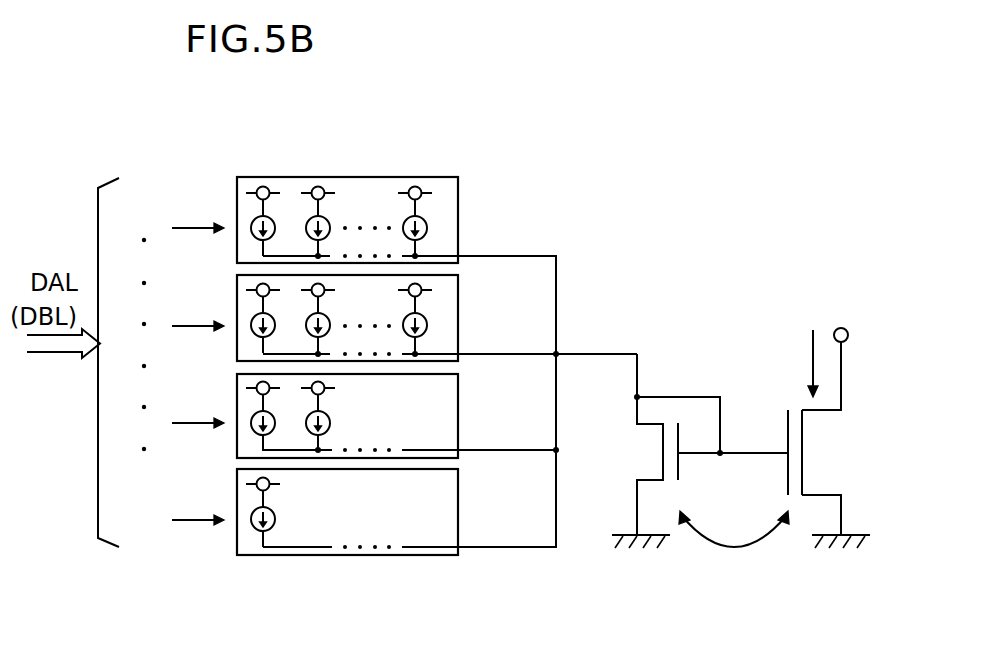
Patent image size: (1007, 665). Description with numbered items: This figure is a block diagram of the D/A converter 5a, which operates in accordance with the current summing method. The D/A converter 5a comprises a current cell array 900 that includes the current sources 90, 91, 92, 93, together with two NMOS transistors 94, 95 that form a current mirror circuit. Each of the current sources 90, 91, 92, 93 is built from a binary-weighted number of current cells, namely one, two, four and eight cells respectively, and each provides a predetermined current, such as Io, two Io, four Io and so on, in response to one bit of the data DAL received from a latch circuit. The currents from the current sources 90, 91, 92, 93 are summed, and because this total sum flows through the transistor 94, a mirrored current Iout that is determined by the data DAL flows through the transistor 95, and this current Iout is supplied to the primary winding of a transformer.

The D/A converter 5a is at (700, 204).
The current cell array 900 is at (254, 561).
The current source 90 is at (236, 480).
The current source 91 is at (236, 388).
The current source 92 is at (236, 294).
The current source 93 is at (236, 186).
The NMOS transistor 94 is at (643, 452).
The NMOS transistor 95 is at (815, 452).